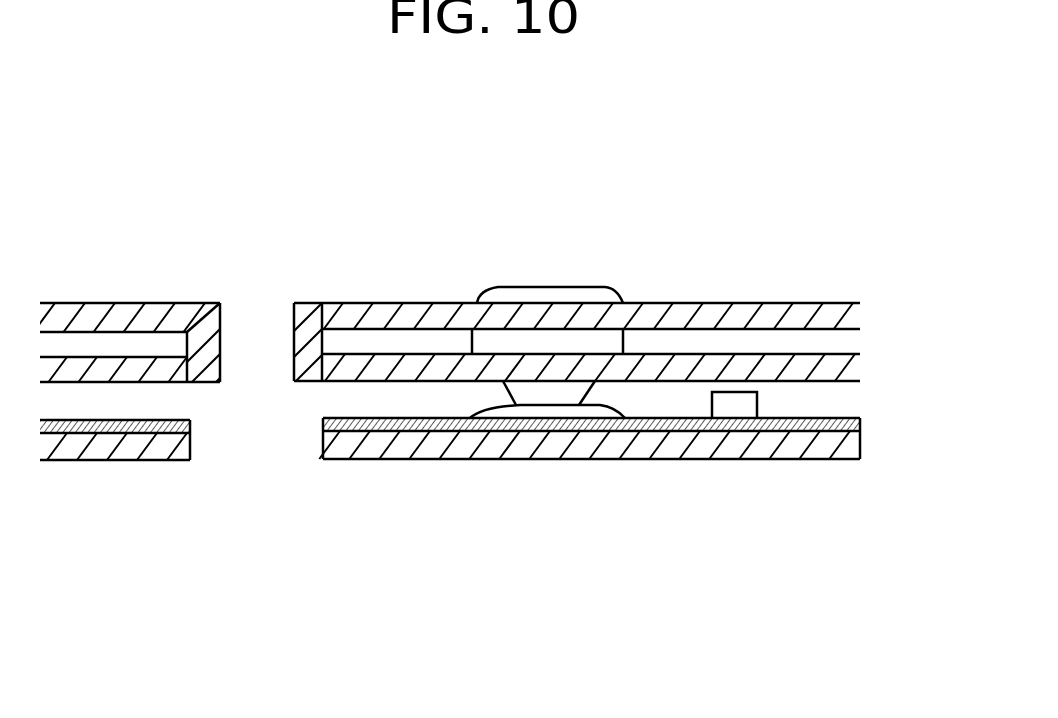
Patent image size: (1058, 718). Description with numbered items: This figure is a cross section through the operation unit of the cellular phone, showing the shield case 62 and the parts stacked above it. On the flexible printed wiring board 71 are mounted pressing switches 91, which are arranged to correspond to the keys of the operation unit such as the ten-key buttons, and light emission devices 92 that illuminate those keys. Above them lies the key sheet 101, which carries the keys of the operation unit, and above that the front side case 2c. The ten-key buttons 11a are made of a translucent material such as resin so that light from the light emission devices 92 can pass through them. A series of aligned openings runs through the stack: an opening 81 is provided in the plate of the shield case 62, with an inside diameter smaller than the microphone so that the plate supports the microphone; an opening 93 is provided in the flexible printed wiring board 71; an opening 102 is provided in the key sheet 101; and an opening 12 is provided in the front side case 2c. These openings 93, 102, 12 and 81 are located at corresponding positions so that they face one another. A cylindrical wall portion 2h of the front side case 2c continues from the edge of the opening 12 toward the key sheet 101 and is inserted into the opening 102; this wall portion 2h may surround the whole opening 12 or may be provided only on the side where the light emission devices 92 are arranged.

The opening 12 is at (264, 248).
The opening 102 is at (243, 352).
The wall portion 2h is at (311, 337).
The ten-key buttons 11a is at (552, 298).
The front side case 2c is at (780, 312).
The key sheet 101 is at (830, 365).
The flexible printed wiring board 71 is at (860, 418).
The shield case 62 is at (798, 448).
The pressing switches 91 is at (552, 412).
The light emission devices 92 is at (737, 407).
The opening 81 is at (230, 461).
The opening 93 is at (288, 418).